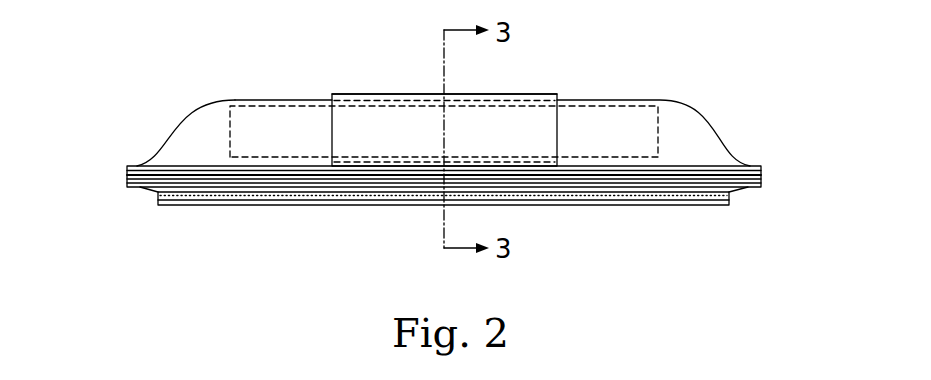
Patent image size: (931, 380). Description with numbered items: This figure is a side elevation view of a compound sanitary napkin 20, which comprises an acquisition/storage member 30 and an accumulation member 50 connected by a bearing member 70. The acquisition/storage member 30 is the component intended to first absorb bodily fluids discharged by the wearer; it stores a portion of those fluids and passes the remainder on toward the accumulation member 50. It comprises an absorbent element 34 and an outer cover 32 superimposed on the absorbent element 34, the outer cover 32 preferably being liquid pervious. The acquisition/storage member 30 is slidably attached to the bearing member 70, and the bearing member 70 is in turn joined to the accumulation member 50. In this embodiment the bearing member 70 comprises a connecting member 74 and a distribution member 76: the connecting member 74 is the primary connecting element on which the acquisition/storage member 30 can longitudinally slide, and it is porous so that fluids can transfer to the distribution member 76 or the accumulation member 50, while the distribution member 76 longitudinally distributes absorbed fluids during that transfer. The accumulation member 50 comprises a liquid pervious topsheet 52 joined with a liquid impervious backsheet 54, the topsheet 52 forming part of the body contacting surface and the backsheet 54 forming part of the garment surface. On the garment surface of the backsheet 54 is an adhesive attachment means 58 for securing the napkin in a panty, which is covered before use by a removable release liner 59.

The compound sanitary napkin 20 is at (188, 58).
The acquisition/storage member 30 is at (532, 91).
The outer cover 32 is at (395, 97).
The absorbent element 34 is at (430, 99).
The accumulation member 50 is at (436, 189).
The topsheet 52 is at (127, 172).
The backsheet 54 is at (127, 182).
The adhesive attachment means 58 is at (158, 195).
The release liner 59 is at (300, 205).
The bearing member 70 is at (687, 108).
The connecting member 74 is at (185, 121).
The distribution member 76 is at (302, 105).